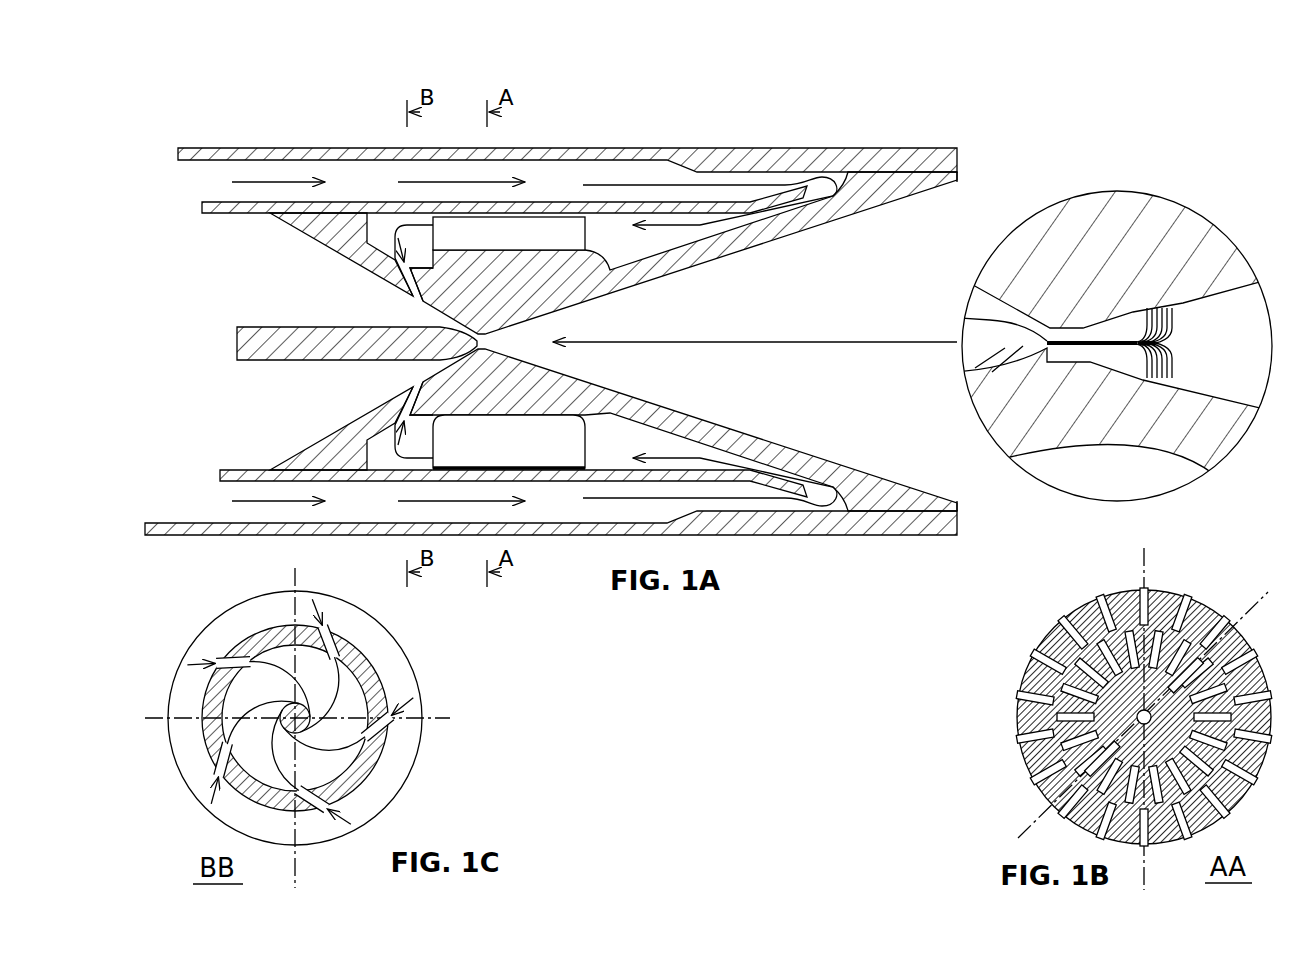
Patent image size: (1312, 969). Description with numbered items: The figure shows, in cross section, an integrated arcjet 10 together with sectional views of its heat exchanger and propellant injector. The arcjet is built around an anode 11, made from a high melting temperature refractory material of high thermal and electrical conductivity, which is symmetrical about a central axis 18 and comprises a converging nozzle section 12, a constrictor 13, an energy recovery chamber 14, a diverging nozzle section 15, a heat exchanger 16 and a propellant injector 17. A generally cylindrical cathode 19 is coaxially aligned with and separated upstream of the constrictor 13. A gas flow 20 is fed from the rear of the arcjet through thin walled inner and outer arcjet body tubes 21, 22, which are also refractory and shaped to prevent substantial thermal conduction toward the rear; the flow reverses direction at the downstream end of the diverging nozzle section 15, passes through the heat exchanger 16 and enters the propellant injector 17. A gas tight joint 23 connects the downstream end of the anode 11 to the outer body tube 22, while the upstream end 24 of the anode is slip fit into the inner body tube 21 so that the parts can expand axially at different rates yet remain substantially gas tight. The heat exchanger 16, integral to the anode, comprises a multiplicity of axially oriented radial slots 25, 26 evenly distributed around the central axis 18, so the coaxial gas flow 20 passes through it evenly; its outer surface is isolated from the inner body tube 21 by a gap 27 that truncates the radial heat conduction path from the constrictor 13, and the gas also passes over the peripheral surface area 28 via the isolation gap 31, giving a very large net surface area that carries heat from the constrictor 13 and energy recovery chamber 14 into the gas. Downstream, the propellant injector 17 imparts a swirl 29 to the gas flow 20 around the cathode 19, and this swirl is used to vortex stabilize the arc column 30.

In FIG. 1A, the integrated arcjet 10 is at (592, 150).
In FIG. 1A, the anode 11 is at (700, 263).
In FIG. 1A, the converging nozzle section 12 is at (340, 247).
In FIG. 1A, the constrictor 13 is at (500, 306).
In FIG. 1B, the constrictor 13 is at (1030, 727).
In FIG. 1A, the energy recovery chamber 14 is at (520, 367).
In FIG. 1A, the diverging nozzle section 15 is at (753, 432).
In FIG. 1A, the heat exchanger 16 is at (485, 275).
In FIG. 1B, the heat exchanger 16 is at (1071, 731).
In FIG. 1A, the propellant injector 17 is at (410, 297).
In FIG. 1A, the central axis 18 is at (812, 343).
In FIG. 1A, the cathode 19 is at (255, 340).
In FIG. 1C, the cathode 19 is at (387, 674).
In FIG. 1A, the gas flow 20 is at (213, 180).
In FIG. 1A, the inner arcjet body tube 21 is at (690, 204).
In FIG. 1A, the outer arcjet body tube 22 is at (834, 175).
In FIG. 1A, the gas tight joint 23 is at (957, 178).
In FIG. 1A, the upstream end of the anode 24 is at (270, 215).
In FIG. 1B, the radial slot 25 is at (1143, 665).
In FIG. 1B, the radial slot 26 is at (1143, 674).
In FIG. 1A, the gap 27 is at (545, 471).
In FIG. 1B, the peripheral surface area 28 is at (1113, 705).
In FIG. 1C, the swirl 29 is at (295, 695).
In FIG. 1A, the arc column 30 is at (1073, 337).
In FIG. 1A, the isolation gap 31 is at (583, 200).